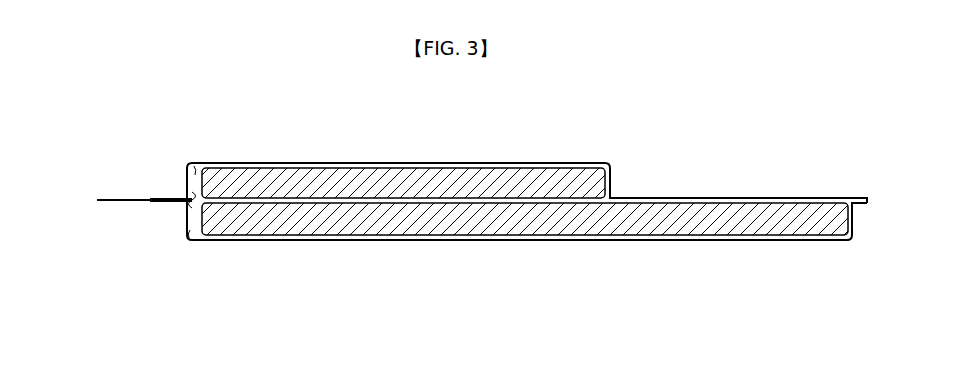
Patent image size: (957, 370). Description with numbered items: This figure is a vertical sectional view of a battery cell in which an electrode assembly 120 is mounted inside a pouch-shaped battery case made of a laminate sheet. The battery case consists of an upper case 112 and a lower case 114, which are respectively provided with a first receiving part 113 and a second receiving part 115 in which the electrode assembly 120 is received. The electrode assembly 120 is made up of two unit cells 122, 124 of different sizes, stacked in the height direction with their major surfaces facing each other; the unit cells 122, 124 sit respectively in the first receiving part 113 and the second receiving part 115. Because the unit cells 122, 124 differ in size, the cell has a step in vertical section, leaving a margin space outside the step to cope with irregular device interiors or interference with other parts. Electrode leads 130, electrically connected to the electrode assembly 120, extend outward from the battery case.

The upper case 112 is at (736, 198).
The first receiving part 113 is at (196, 173).
The lower case 114 is at (853, 229).
The second receiving part 115 is at (186, 238).
The electrode assembly 120 is at (525, 259).
The unit cell 122 is at (503, 193).
The unit cell 124 is at (568, 228).
The electrode leads 130 is at (134, 198).